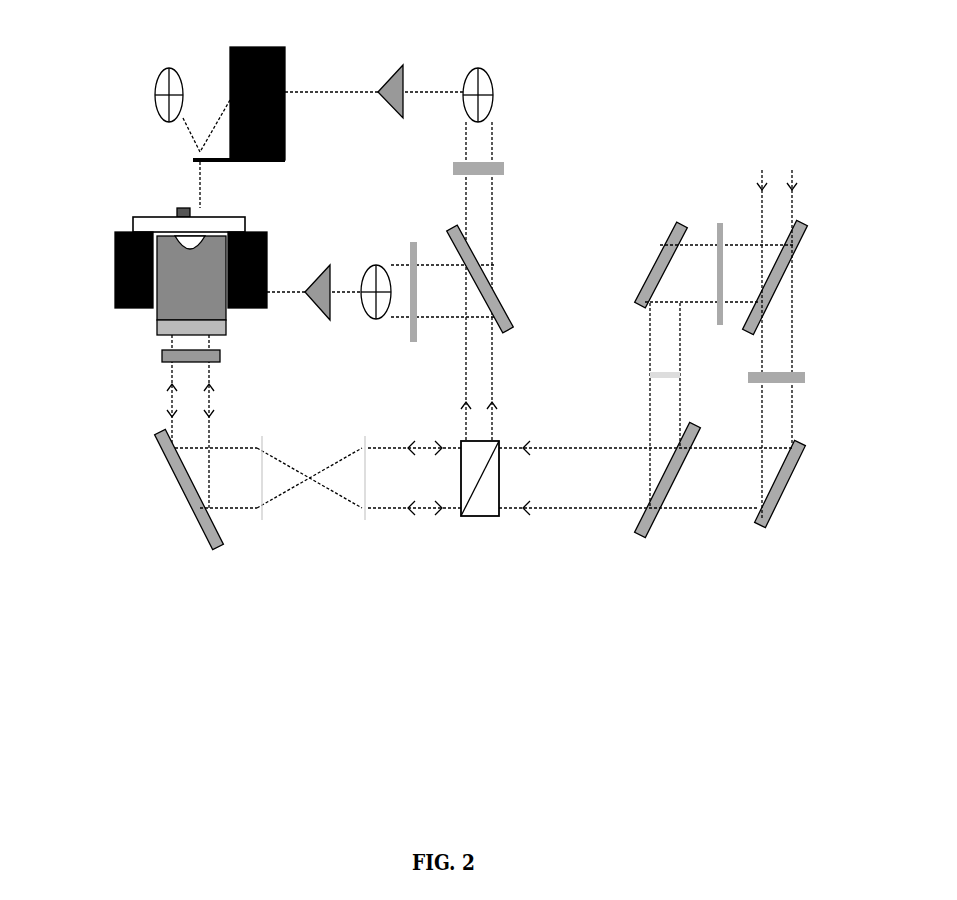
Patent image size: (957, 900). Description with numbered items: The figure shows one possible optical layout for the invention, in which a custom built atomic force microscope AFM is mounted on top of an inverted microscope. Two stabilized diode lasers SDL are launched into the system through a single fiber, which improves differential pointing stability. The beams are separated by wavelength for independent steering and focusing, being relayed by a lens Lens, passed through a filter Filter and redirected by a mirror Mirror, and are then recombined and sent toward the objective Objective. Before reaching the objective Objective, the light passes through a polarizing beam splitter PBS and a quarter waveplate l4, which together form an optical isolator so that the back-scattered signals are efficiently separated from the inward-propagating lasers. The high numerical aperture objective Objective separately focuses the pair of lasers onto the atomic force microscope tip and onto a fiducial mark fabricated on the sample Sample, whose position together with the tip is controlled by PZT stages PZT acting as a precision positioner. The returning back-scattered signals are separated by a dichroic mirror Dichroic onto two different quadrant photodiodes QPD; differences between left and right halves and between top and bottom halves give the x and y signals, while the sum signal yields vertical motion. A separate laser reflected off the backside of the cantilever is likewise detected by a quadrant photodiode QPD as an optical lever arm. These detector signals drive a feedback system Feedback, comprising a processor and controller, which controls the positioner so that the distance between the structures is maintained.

The atomic force microscope AFM is at (220, 108).
The feedback system Feedback is at (374, 63).
The quadrant photodiode QPD is at (502, 254).
The sample Sample is at (145, 203).
The PZT stages PZT is at (272, 170).
The microscope objective Objective is at (152, 328).
The quarter waveplate l4 is at (220, 368).
The mirror Mirror is at (481, 403).
The dichroic mirror Dichroic is at (427, 283).
The lens Lens is at (649, 312).
The filter Filter is at (806, 377).
The stabilized diode lasers SDL is at (775, 139).
The polarizing beam splitter PBS is at (478, 513).